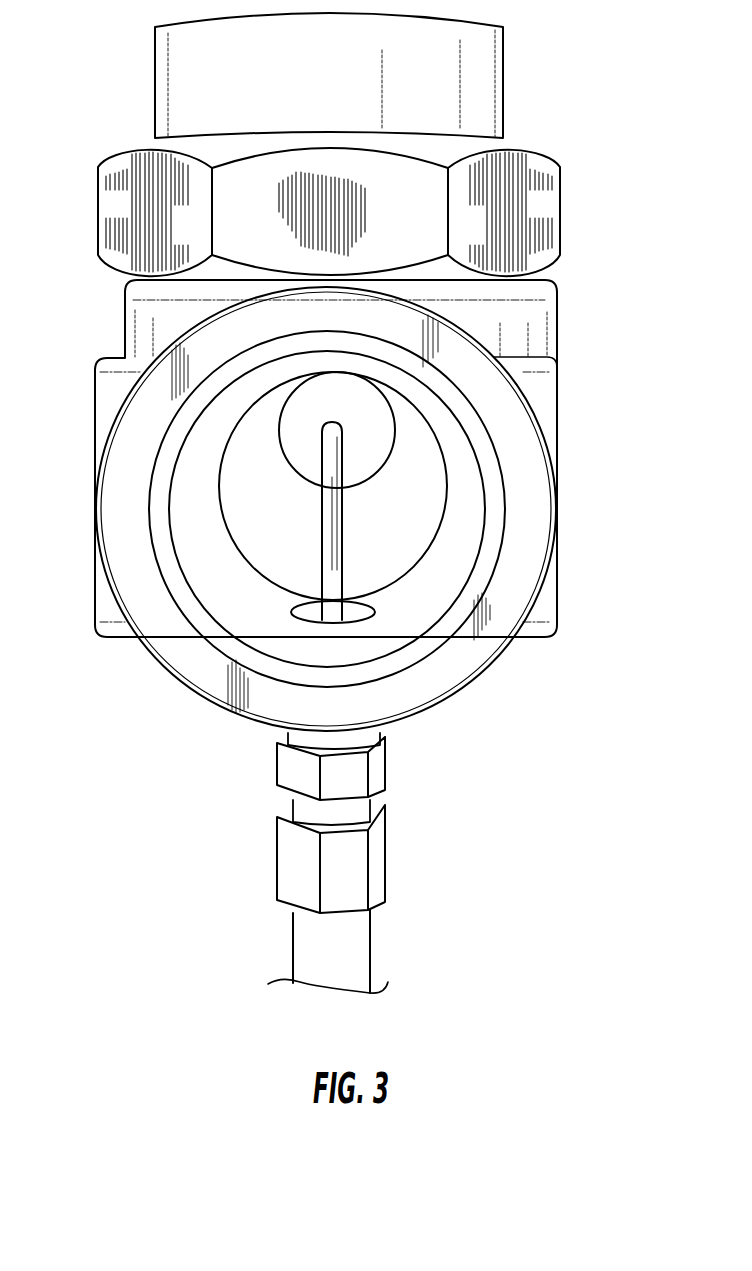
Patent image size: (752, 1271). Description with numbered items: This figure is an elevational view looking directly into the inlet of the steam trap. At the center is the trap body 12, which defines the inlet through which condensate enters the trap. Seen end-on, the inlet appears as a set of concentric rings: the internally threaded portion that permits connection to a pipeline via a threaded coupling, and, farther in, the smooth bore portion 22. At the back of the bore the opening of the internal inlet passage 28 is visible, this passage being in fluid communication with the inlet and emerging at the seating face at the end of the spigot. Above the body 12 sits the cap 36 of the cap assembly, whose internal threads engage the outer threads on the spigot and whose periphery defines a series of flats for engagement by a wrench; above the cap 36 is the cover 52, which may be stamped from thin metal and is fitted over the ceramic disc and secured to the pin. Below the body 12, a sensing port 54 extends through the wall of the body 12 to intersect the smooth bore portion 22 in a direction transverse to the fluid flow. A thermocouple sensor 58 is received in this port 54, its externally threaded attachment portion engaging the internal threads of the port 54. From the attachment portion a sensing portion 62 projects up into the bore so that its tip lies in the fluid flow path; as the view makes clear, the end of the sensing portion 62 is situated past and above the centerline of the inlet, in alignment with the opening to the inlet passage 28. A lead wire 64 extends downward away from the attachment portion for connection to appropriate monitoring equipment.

The trap body 12 is at (558, 347).
The smooth bore portion 22 is at (258, 595).
The internal inlet passage 28 is at (368, 423).
The cap 36 is at (547, 203).
The cover 52 is at (483, 100).
The sensing port 54 is at (352, 603).
The thermocouple sensor 58 is at (264, 753).
The sensing portion 62 is at (328, 443).
The lead wire 64 is at (357, 958).